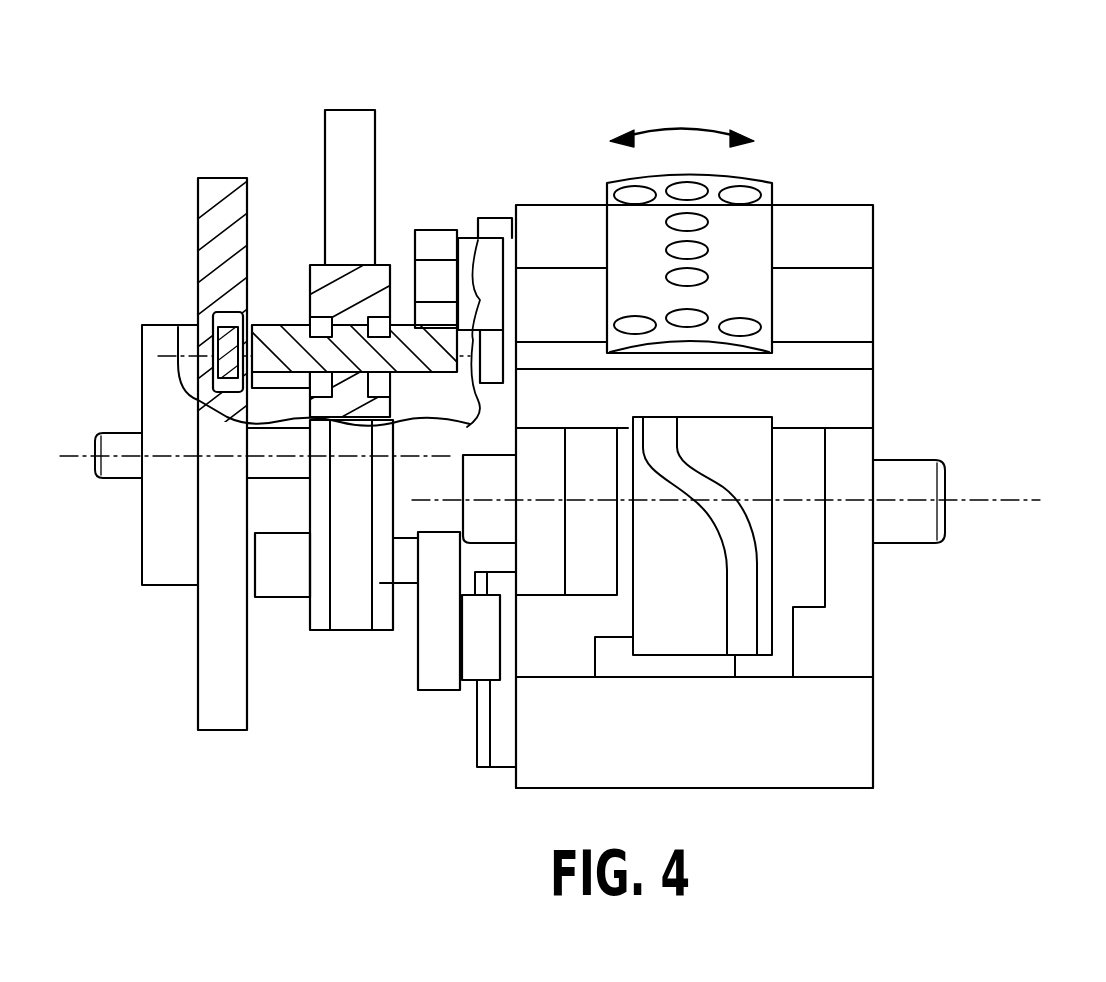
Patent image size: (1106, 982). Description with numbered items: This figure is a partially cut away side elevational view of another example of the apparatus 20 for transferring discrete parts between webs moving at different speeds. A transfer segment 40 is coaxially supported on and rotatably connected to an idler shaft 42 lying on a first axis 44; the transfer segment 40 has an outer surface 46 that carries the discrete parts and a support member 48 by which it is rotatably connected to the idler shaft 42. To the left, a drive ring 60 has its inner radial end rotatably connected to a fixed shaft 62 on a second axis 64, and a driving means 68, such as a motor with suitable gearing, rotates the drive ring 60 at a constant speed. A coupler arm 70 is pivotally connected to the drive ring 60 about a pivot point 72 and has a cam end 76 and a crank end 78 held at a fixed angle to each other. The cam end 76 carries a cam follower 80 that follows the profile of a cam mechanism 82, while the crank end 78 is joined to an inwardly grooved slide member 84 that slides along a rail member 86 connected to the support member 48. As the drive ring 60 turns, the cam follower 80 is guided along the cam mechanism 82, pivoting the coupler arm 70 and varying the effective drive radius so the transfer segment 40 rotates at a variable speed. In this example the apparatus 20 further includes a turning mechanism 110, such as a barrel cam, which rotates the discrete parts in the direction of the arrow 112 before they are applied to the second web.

The apparatus 20 is at (1018, 186).
The transfer segment 40 is at (857, 207).
The idler shaft 42 is at (935, 460).
The first axis 44 is at (1035, 472).
The outer surface 46 is at (757, 225).
The support member 48 is at (545, 655).
The drive ring 60 is at (322, 262).
The fixed shaft 62 is at (113, 480).
The second axis 64 is at (158, 456).
The driving means 68 is at (353, 108).
The coupler arm 70 is at (413, 652).
The pivot point 72 is at (368, 572).
The cam end 76 is at (280, 325).
The crank end 78 is at (463, 230).
The cam follower 80 is at (225, 328).
The cam mechanism 82 is at (198, 197).
The slide member 84 is at (488, 257).
The rail member 86 is at (505, 218).
The turning mechanism 110 is at (750, 632).
The arrow 112 is at (682, 123).